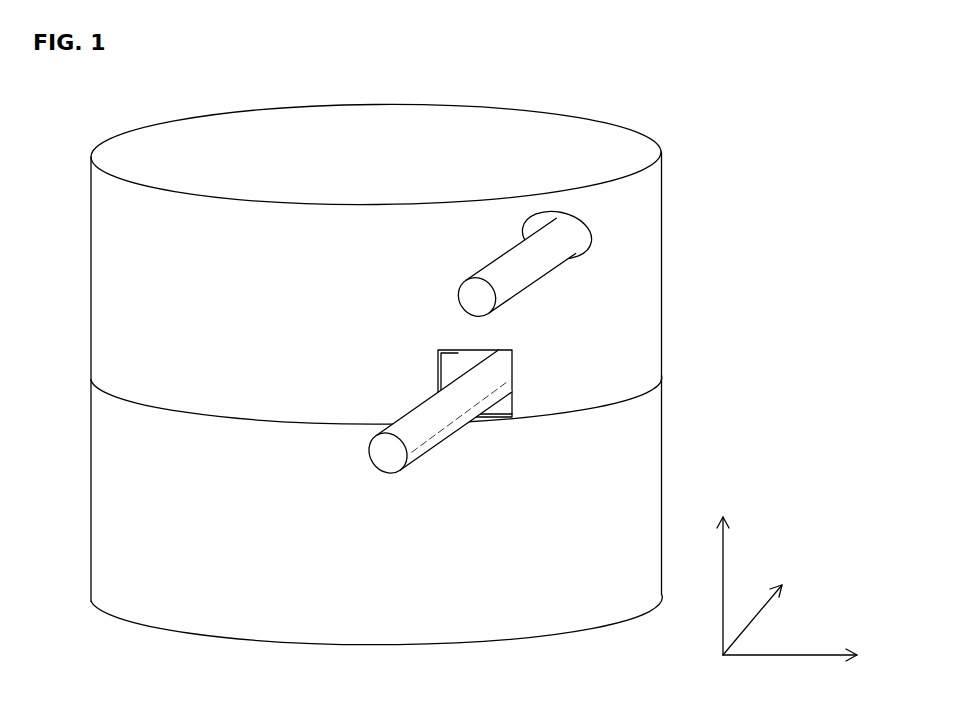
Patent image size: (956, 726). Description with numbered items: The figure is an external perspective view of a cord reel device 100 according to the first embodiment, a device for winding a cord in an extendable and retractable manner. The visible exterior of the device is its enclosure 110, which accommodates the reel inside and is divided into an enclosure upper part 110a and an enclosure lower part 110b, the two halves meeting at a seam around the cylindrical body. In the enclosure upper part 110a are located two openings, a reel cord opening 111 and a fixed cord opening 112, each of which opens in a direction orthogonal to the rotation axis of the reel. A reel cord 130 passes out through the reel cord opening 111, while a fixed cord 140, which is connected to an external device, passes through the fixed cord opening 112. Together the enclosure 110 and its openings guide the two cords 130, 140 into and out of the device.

The cord reel device 100 is at (598, 100).
The enclosure 110 is at (65, 200).
The enclosure upper part 110a is at (376, 263).
The enclosure lower part 110b is at (376, 510).
The reel cord opening 111 is at (512, 398).
The fixed cord opening 112 is at (578, 260).
The reel cord 130 is at (427, 418).
The fixed cord 140 is at (510, 270).